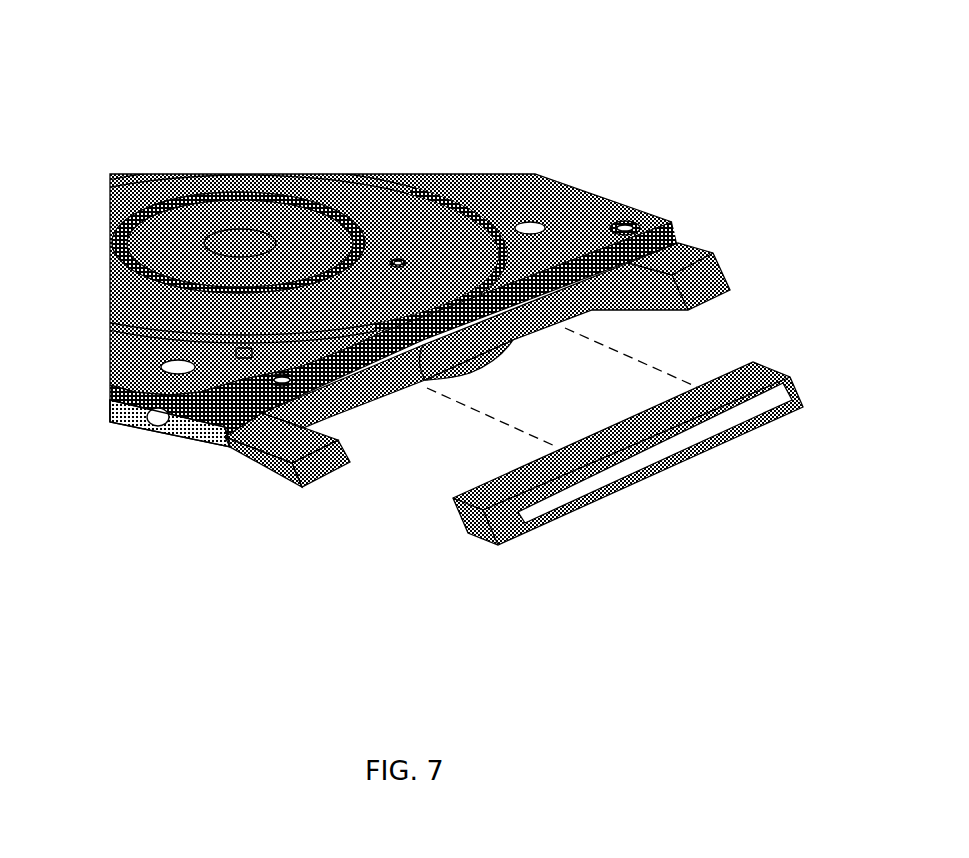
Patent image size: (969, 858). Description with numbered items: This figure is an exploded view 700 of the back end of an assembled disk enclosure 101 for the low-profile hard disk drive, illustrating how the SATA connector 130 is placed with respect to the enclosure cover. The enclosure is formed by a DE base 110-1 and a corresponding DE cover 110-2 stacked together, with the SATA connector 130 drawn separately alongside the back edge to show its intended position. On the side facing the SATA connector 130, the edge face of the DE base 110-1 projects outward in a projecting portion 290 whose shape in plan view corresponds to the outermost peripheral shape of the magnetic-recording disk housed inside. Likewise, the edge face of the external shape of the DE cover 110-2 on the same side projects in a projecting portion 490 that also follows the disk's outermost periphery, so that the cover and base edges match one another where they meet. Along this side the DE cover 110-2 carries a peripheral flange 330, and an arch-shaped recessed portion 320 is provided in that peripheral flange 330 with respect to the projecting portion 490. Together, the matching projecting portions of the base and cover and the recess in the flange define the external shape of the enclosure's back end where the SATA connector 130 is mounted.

The view of data storage device assembly 700 is at (141, 88).
The data storage device assembly 101 is at (656, 219).
The DE base 110-1 is at (125, 423).
The DE cover 110-2 is at (445, 183).
The projecting portion 490 is at (473, 310).
The projecting portion 290 is at (493, 352).
The recessed portion 320 is at (423, 380).
The peripheral flange 330 is at (208, 423).
The SATA connector 130 is at (552, 521).